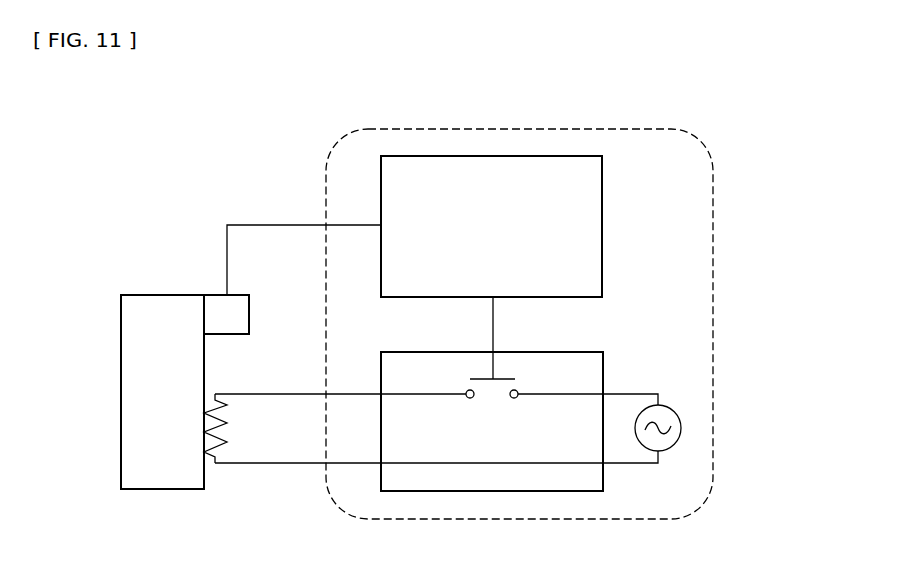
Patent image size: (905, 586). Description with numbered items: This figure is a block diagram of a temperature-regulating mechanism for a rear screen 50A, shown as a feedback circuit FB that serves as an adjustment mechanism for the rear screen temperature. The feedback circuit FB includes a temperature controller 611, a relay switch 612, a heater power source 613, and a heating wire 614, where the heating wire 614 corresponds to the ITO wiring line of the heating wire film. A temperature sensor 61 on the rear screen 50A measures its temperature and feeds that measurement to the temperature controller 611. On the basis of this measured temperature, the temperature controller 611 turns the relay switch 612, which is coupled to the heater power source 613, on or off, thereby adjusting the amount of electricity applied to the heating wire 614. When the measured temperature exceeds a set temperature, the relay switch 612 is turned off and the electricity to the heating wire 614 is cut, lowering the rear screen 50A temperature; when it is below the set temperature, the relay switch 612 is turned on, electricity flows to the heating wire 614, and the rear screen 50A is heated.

The feedback circuit FB is at (546, 127).
The temperature controller 611 is at (602, 225).
The relay switch 612 is at (508, 362).
The heater power source 613 is at (681, 428).
The heating wire 614 is at (222, 445).
The rear screen 50A is at (147, 280).
The temperature sensor 61 is at (217, 295).